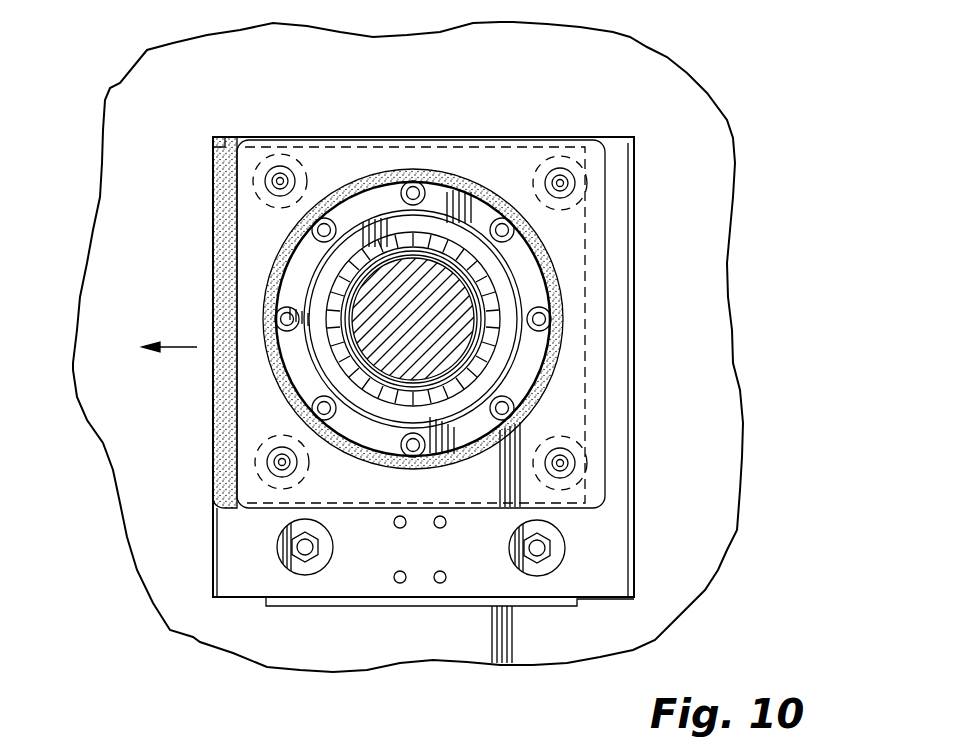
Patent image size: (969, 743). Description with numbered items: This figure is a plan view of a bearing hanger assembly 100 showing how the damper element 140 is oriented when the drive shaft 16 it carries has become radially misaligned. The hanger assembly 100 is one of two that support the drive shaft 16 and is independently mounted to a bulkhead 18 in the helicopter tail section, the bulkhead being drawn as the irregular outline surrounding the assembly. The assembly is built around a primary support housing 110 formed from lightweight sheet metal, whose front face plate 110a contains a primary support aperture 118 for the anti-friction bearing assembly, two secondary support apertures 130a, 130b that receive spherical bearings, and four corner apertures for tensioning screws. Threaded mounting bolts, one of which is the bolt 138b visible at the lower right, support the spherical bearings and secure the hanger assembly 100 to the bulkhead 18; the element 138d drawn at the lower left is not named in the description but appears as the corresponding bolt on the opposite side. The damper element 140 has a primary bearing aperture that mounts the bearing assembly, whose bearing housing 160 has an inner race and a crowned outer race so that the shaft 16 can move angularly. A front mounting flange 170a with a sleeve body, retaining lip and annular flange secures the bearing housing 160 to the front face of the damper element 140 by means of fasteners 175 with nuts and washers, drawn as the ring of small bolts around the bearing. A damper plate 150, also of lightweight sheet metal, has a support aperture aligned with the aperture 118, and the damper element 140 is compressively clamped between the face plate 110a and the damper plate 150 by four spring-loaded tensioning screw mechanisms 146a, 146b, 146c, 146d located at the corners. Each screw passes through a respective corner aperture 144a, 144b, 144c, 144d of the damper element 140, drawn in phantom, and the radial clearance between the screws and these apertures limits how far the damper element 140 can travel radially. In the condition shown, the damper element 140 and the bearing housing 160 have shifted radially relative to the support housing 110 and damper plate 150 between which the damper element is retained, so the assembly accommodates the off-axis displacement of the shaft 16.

The drive shaft 16 is at (412, 310).
The bulkhead structure 18 is at (122, 105).
The bearing hanger assembly 100 is at (637, 103).
The primary support housing 110 is at (633, 297).
The front face plate 110a is at (337, 590).
The primary support aperture 118 is at (450, 172).
The secondary support aperture 130a is at (277, 540).
The secondary support aperture 130b is at (565, 547).
The threaded mounting bolt 138b is at (543, 564).
The nut 138d is at (295, 567).
The damper element 140 is at (217, 207).
The corner aperture 144a is at (243, 133).
The corner aperture 144b is at (537, 138).
The corner aperture 144c is at (553, 433).
The corner aperture 144d is at (252, 470).
The tensioning screw mechanism 146a is at (275, 165).
The tensioning screw mechanism 146b is at (565, 168).
The tensioning screw mechanism 146c is at (576, 465).
The tensioning screw mechanism 146d is at (267, 453).
The damper plate 150 is at (337, 170).
The bearing housing 160 is at (530, 380).
The front mounting flange 170a is at (520, 285).
The fastener 175 is at (267, 313).